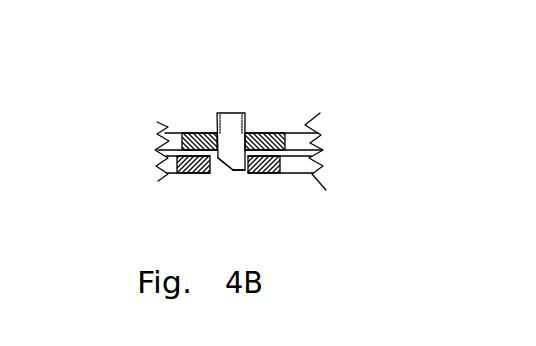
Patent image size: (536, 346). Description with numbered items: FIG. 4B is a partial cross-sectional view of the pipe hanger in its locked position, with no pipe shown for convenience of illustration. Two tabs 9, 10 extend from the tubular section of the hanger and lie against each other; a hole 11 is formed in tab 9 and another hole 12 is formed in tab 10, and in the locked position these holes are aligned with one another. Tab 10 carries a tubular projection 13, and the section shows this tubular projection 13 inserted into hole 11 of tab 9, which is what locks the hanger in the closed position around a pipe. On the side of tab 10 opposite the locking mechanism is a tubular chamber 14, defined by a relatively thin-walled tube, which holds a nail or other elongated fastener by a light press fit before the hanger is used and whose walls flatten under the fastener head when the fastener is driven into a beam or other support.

The tab 9 is at (163, 168).
The tab 10 is at (155, 143).
The hole 11 is at (224, 158).
The hole 12 is at (239, 113).
The tubular projection 13 is at (232, 168).
The tubular chamber 14 is at (217, 113).